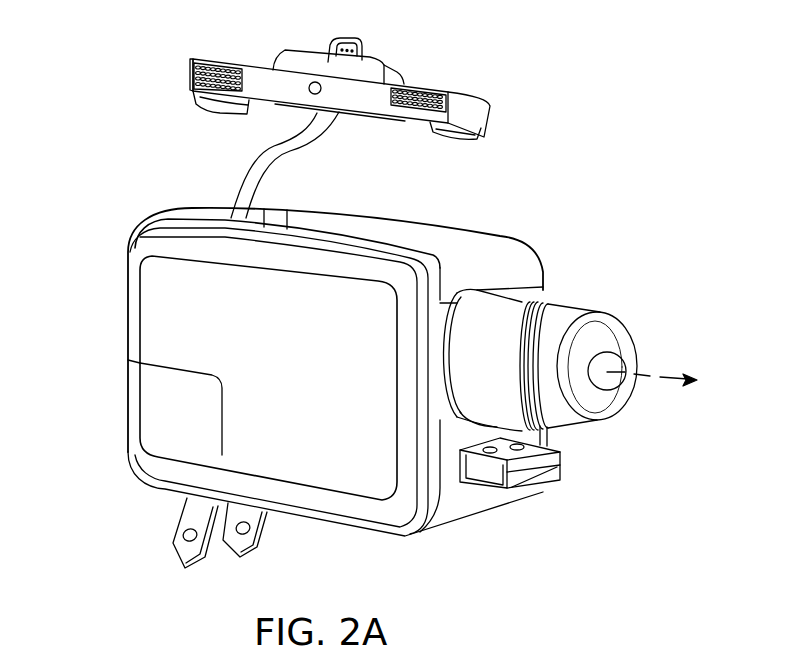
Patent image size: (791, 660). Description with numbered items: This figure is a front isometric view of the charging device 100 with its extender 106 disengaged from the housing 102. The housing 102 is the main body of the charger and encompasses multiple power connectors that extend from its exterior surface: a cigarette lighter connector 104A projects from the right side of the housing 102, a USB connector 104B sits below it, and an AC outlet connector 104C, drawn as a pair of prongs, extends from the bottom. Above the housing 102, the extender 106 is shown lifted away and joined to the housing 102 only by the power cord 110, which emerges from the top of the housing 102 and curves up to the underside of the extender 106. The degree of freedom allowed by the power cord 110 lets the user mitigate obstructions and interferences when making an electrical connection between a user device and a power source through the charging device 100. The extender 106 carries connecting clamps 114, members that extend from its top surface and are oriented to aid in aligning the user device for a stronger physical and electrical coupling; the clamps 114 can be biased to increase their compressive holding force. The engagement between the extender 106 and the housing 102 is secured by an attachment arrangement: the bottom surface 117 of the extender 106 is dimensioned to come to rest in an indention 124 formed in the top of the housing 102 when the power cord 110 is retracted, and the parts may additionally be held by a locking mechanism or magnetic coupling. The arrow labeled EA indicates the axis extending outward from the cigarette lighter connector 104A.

The charging device 100 is at (632, 90).
The housing 102 is at (128, 250).
The cigarette lighter connector 104A is at (600, 403).
The USB connector 104B is at (527, 489).
The AC outlet connector 104C is at (174, 537).
The extender 106 is at (250, 80).
The power cord 110 is at (248, 186).
The connecting clamps 114 is at (404, 82).
The bottom surface of the extender 117 is at (463, 152).
The indention of the housing 124 is at (378, 230).
The optical axis EA is at (648, 374).